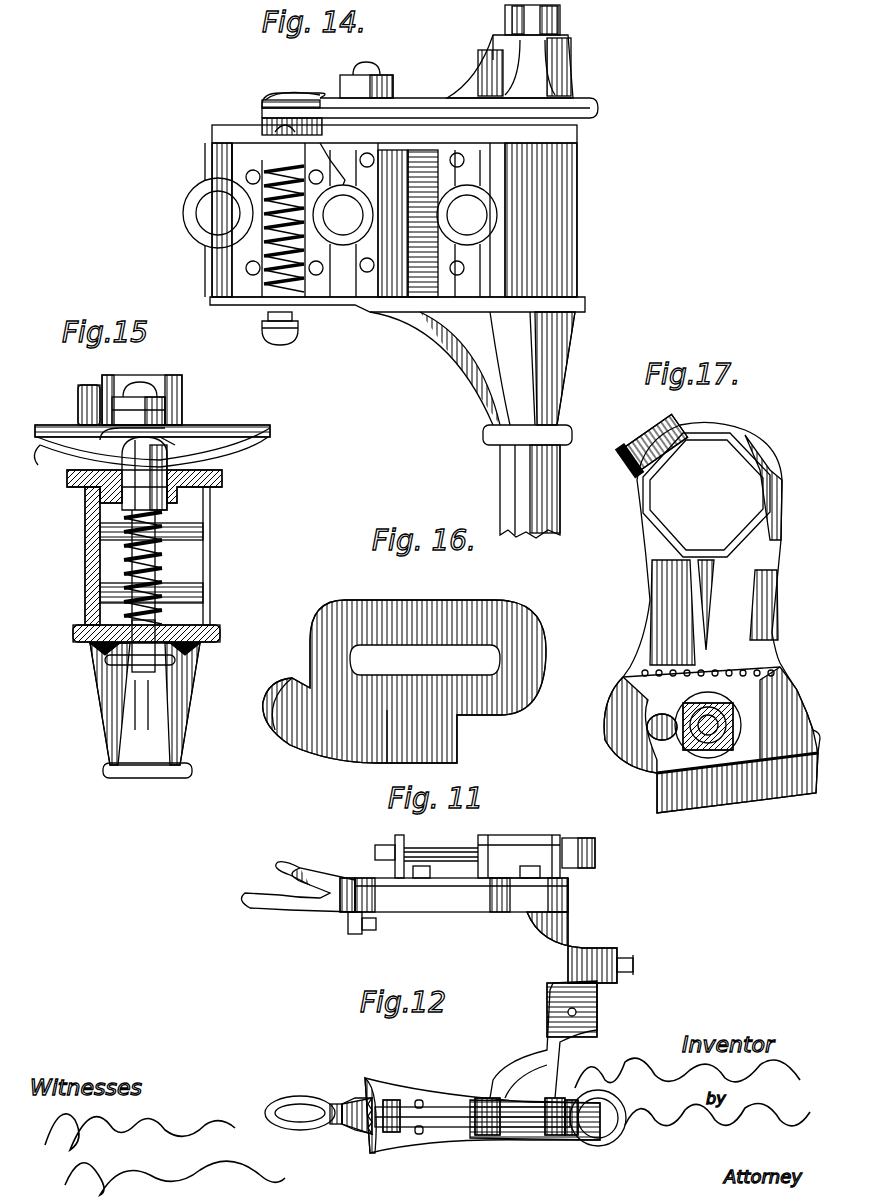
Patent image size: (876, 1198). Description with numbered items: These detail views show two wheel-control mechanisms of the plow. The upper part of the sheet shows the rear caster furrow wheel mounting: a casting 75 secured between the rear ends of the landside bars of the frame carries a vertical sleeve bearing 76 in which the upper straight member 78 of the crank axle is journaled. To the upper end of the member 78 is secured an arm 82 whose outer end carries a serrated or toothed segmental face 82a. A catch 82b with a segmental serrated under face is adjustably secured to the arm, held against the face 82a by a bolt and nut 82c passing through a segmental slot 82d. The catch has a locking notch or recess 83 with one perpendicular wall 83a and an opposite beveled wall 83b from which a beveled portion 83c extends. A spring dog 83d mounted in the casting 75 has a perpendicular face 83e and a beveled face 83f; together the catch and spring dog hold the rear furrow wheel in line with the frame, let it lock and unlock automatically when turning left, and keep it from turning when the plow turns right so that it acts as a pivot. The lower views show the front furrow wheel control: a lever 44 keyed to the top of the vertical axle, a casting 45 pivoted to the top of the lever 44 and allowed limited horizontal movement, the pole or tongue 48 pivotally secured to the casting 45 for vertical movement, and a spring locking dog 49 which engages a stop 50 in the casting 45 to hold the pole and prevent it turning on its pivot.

In FIG. 11, the lever 44 is at (580, 930).
In FIG. 12, the lever 44 is at (568, 1138).
In FIG. 11, the casting 45 is at (447, 888).
In FIG. 12, the casting 45 is at (432, 1098).
In FIG. 12, the pole or tongue 48 is at (580, 1012).
In FIG. 11, the spring locking dog 49 is at (318, 876).
In FIG. 12, the spring locking dog 49 is at (318, 1122).
In FIG. 11, the stop 50 is at (360, 882).
In FIG. 12, the stop 50 is at (350, 1130).
In FIG. 14, the casting 75 is at (401, 235).
In FIG. 14, the vertical sleeve bearing 76 is at (491, 378).
In FIG. 15, the vertical sleeve bearing 76 is at (161, 699).
In FIG. 14, the upper straight member 78 is at (550, 491).
In FIG. 14, the arm 82 is at (430, 70).
In FIG. 15, the arm 82 is at (183, 405).
In FIG. 17, the arm 82 is at (700, 730).
In FIG. 14, the serrated or toothed segmental face 82a is at (292, 88).
In FIG. 15, the serrated or toothed segmental face 82a is at (55, 466).
In FIG. 16, the serrated or toothed segmental face 82a is at (434, 696).
In FIG. 17, the serrated or toothed segmental face 82a is at (655, 712).
In FIG. 16, the catch 82b is at (383, 600).
In FIG. 14, the bolt and nut 82c is at (372, 76).
In FIG. 15, the bolt and nut 82c is at (150, 400).
In FIG. 17, the segmental slot 82d is at (647, 727).
In FIG. 15, the locking notch or recess 83 is at (144, 473).
In FIG. 16, the locking notch or recess 83 is at (405, 768).
In FIG. 15, the perpendicular wall 83a is at (85, 490).
In FIG. 15, the beveled wall 83b is at (165, 445).
In FIG. 15, the beveled portion 83c is at (235, 455).
In FIG. 15, the spring dog 83d is at (191, 448).
In FIG. 15, the perpendicular face 83e is at (95, 505).
In FIG. 16, the perpendicular face 83e is at (385, 763).
In FIG. 16, the beveled face 83f is at (266, 726).